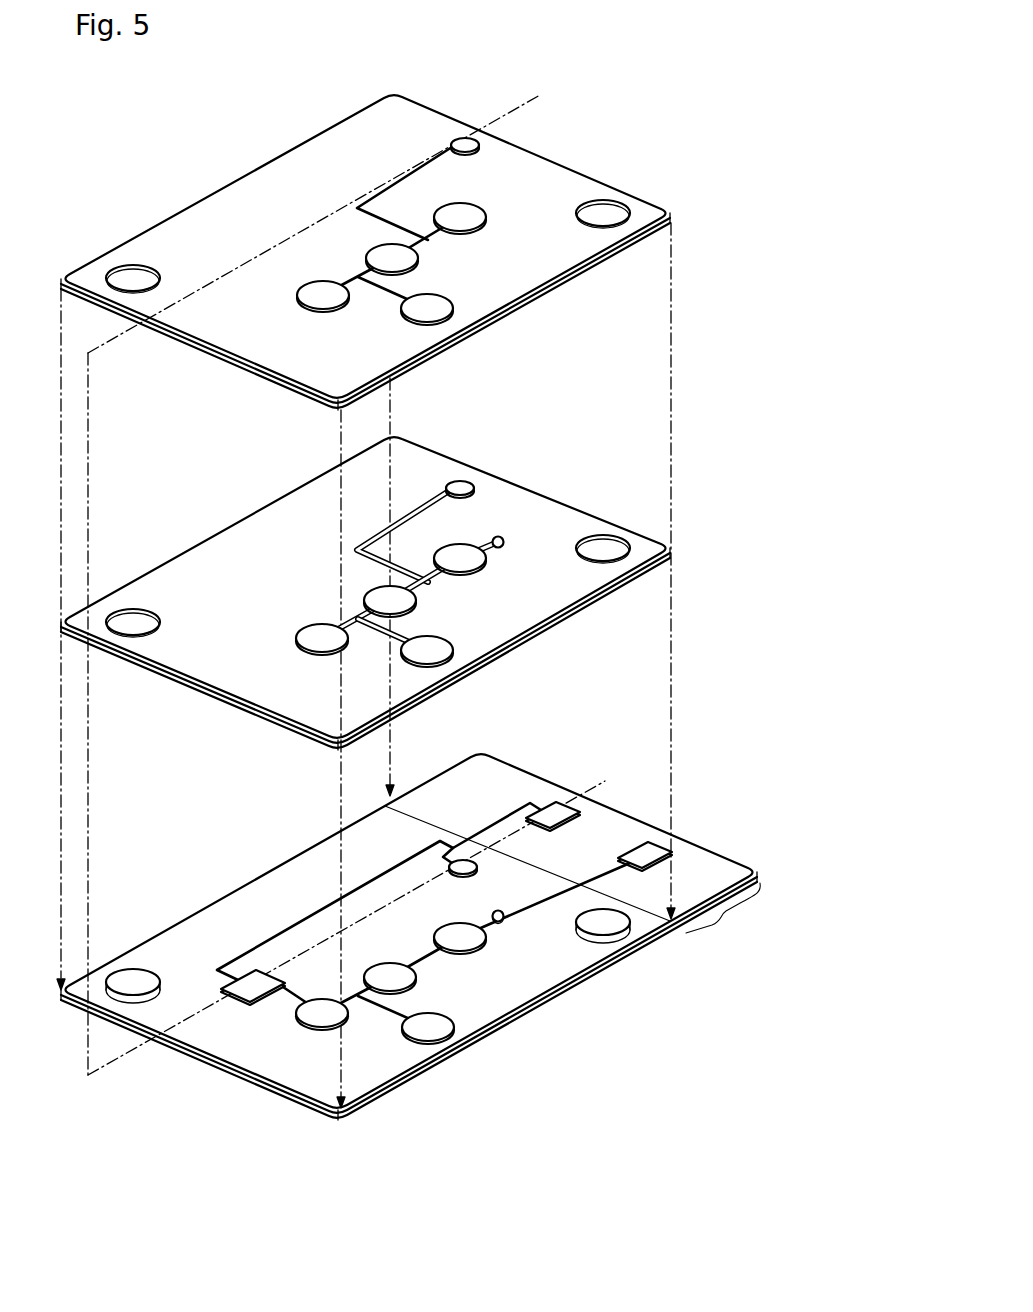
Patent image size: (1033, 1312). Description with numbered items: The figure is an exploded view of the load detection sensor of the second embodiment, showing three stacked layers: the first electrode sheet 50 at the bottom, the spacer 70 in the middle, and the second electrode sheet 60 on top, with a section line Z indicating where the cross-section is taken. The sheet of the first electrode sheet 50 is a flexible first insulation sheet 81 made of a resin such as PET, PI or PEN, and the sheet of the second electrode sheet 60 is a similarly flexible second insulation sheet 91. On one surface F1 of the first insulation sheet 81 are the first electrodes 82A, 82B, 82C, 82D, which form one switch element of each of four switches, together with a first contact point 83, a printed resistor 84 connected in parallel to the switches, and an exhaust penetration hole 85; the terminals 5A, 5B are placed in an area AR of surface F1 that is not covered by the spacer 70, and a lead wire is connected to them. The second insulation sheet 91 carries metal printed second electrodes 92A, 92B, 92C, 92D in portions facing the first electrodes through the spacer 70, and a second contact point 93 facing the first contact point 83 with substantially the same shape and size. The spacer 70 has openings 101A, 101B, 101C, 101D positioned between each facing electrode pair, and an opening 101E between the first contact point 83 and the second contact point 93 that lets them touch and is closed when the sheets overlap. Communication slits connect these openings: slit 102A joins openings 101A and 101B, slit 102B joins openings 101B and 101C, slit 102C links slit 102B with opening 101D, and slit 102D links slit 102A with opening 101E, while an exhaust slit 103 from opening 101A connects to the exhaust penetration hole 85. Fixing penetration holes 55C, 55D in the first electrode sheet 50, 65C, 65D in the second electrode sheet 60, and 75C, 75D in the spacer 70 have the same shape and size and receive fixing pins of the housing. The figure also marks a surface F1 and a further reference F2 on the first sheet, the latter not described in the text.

The first electrode sheet 50 is at (782, 842).
The second electrode sheet 60 is at (709, 165).
The spacer 70 is at (709, 500).
The terminal 5A is at (655, 848).
The terminal 5B is at (568, 813).
The fixing penetration hole 55C is at (614, 934).
The fixing penetration hole 55D is at (129, 968).
The fixing penetration hole 65C is at (606, 200).
The fixing penetration hole 65D is at (120, 265).
The fixing penetration hole 75C is at (604, 535).
The fixing penetration hole 75D is at (131, 636).
The first insulation sheet 81 is at (168, 1050).
The first electrode 82A is at (480, 950).
The first electrode 82B is at (417, 972).
The first electrode 82C is at (333, 1018).
The first electrode 82D is at (433, 1032).
The first contact point 83 is at (450, 866).
The resistor 84 is at (240, 1003).
The exhaust penetration hole 85 is at (507, 913).
The second insulation sheet 91 is at (204, 351).
The second electrode 92A is at (486, 230).
The second electrode 92B is at (418, 263).
The second electrode 92C is at (445, 318).
The second electrode 92D is at (348, 302).
The second contact point 93 is at (452, 142).
The opening 101A is at (478, 572).
The opening 101B is at (415, 603).
The opening 101C is at (440, 660).
The opening 101D is at (323, 652).
The opening 101E is at (466, 482).
The communication slit 102A is at (428, 578).
The communication slit 102B is at (345, 620).
The communication slit 102C is at (378, 632).
The communication slit 102D is at (355, 546).
The exhaust slit 103 is at (503, 537).
The area AR is at (572, 873).
The line Z- Z is at (366, 594).
The one surface F1 is at (300, 1070).
The direction F2 is at (321, 1138).